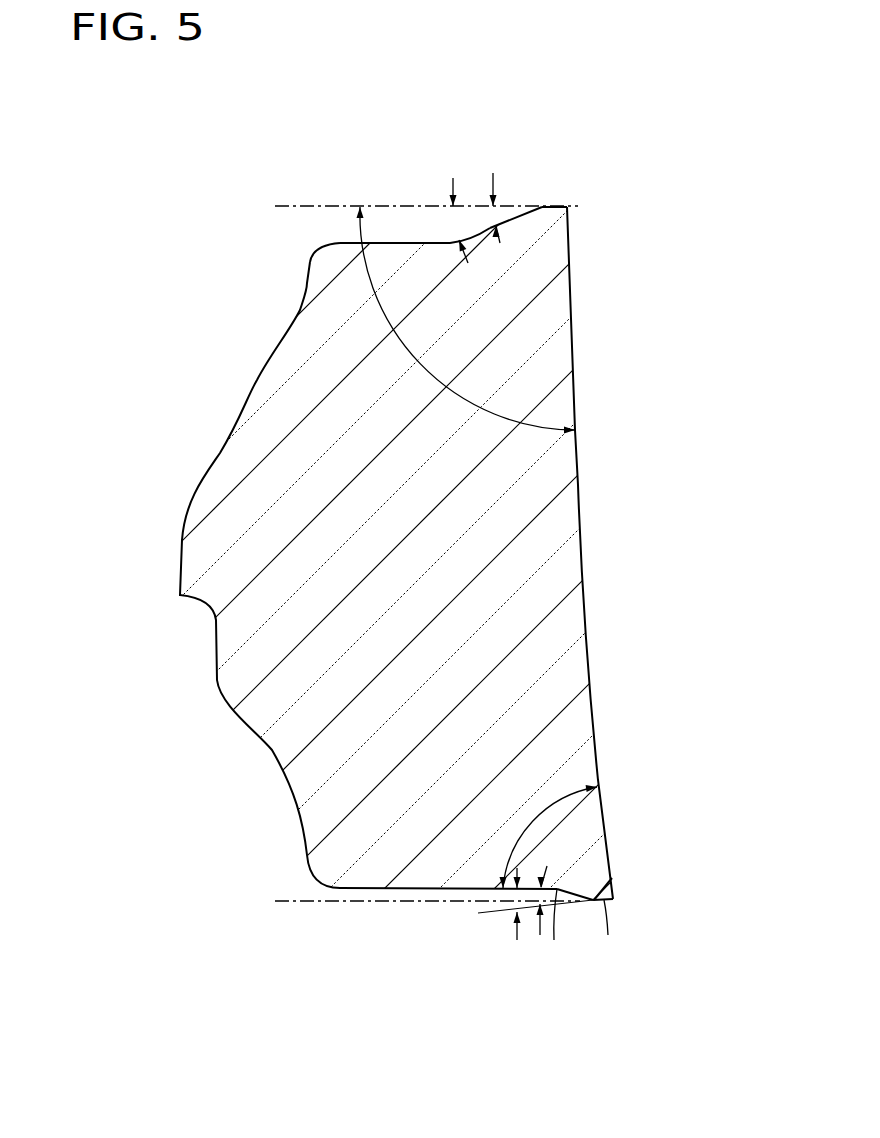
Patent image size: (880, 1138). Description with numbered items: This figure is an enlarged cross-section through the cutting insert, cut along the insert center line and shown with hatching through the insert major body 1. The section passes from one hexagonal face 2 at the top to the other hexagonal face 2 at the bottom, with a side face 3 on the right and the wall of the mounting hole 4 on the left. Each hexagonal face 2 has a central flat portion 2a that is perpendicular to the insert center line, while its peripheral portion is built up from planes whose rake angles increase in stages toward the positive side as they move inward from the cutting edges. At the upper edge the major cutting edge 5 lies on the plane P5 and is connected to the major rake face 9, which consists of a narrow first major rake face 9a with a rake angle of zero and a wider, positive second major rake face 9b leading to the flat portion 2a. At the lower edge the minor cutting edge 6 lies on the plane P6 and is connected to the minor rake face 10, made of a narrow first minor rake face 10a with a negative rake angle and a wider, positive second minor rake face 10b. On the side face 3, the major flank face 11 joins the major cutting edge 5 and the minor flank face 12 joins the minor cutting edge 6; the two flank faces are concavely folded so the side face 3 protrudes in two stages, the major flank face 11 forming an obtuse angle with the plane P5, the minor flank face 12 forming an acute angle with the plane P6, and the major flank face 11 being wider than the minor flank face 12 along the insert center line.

The insert major body 1 is at (440, 537).
The hexagonal face 2 is at (426, 561).
The flat portion 2a is at (359, 240).
The side face 3 is at (663, 553).
The mounting hole 4 is at (221, 235).
The major cutting edge 5 is at (576, 207).
The minor cutting edge 6 is at (617, 899).
The major rake face 9 is at (499, 124).
The first major rake face 9a is at (552, 207).
The second major rake face 9b is at (477, 233).
The minor rake face 10 is at (597, 979).
The first minor rake face 10a is at (605, 900).
The second minor rake face 10b is at (558, 893).
The major flank face 11 is at (575, 485).
The minor flank face 12 is at (592, 722).
The plane P5 is at (352, 204).
The plane P6 is at (320, 904).